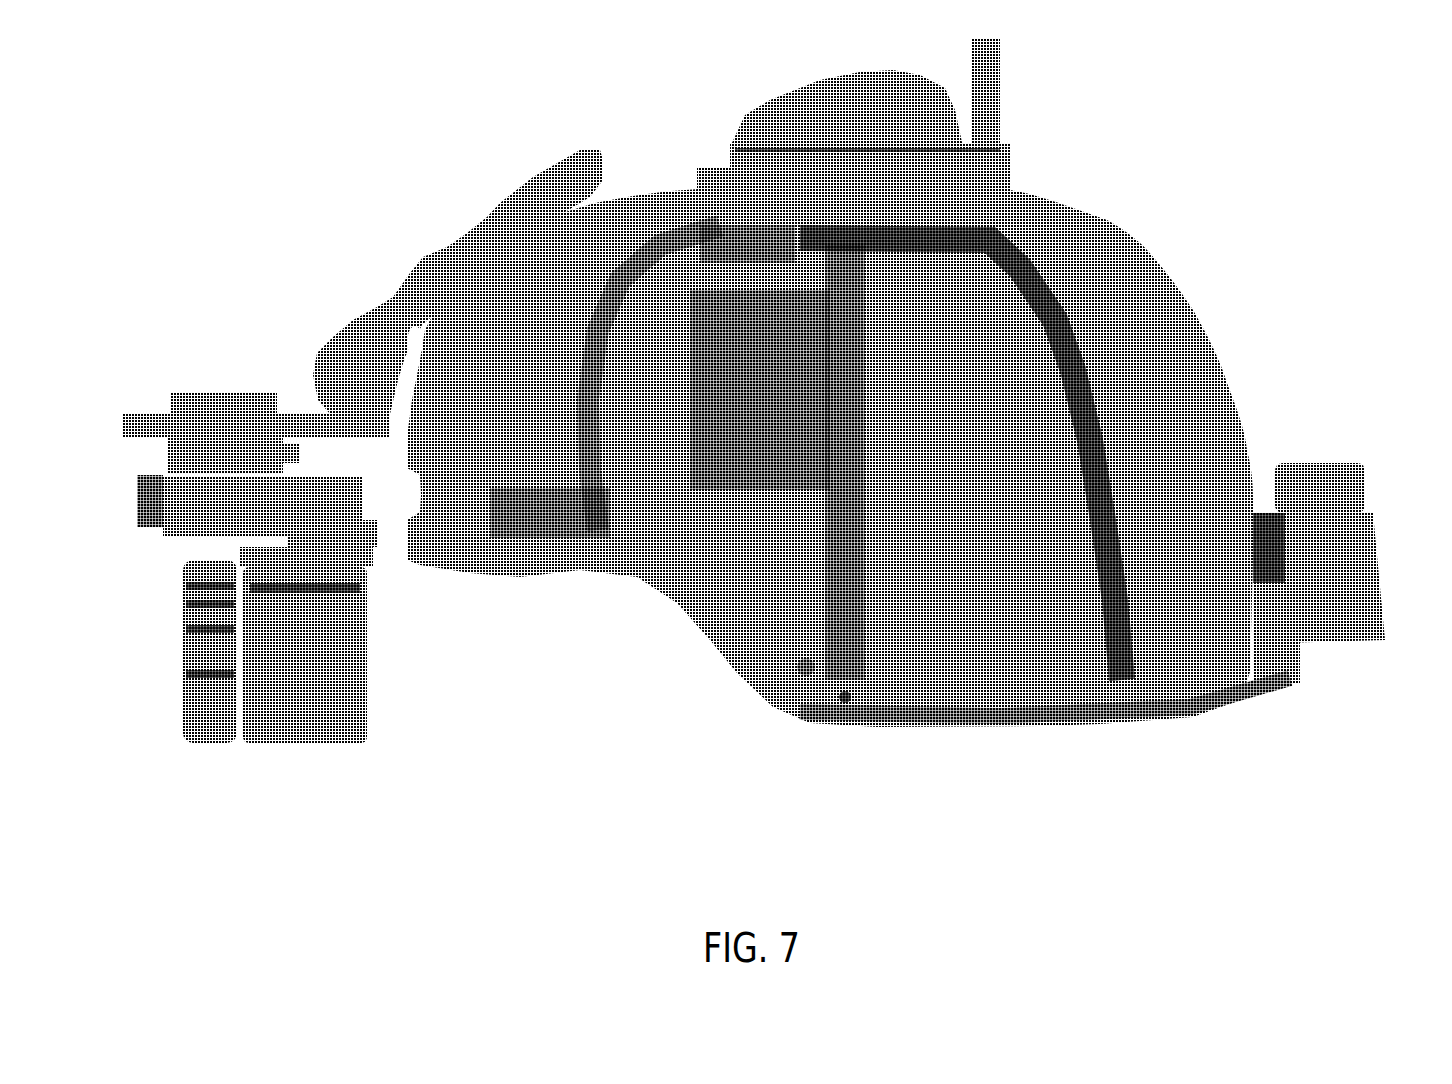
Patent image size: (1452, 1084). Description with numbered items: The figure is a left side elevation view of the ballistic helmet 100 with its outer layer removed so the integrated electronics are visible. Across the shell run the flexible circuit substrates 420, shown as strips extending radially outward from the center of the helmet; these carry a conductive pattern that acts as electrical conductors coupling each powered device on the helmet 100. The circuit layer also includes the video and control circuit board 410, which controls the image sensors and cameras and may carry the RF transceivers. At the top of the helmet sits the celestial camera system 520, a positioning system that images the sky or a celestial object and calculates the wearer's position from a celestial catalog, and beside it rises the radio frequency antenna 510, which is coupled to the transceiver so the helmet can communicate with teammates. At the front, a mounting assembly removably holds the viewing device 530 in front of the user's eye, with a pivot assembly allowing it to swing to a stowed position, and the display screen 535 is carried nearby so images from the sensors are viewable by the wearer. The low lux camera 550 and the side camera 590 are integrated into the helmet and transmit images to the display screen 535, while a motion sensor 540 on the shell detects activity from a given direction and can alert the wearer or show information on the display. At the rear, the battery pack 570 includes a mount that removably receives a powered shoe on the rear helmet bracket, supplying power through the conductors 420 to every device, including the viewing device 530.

The ballistic helmet 100 is at (786, 426).
The circuit board 410 is at (695, 218).
The circuit substrate 420 is at (1073, 357).
The radio frequency antenna 510 is at (1003, 87).
The celestial camera system 520 is at (1015, 157).
The viewing device 530 is at (261, 750).
The display screen 535 is at (370, 636).
The motion sensor 540 is at (850, 705).
The low lux camera 550 is at (537, 518).
The battery pack 570 is at (1378, 535).
The side camera 590 is at (808, 680).